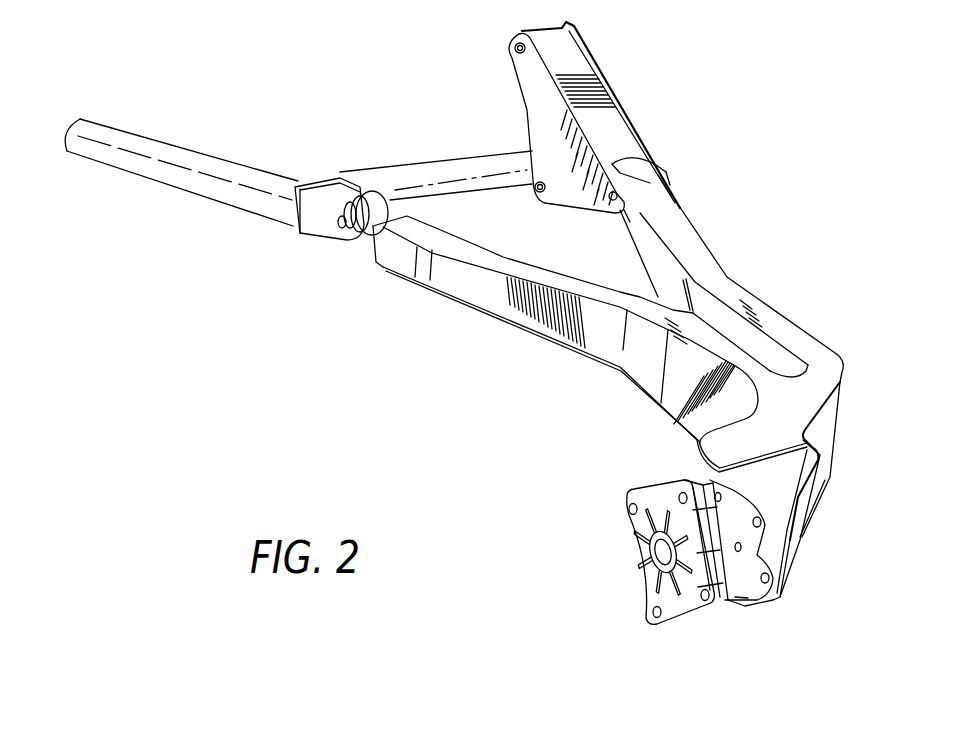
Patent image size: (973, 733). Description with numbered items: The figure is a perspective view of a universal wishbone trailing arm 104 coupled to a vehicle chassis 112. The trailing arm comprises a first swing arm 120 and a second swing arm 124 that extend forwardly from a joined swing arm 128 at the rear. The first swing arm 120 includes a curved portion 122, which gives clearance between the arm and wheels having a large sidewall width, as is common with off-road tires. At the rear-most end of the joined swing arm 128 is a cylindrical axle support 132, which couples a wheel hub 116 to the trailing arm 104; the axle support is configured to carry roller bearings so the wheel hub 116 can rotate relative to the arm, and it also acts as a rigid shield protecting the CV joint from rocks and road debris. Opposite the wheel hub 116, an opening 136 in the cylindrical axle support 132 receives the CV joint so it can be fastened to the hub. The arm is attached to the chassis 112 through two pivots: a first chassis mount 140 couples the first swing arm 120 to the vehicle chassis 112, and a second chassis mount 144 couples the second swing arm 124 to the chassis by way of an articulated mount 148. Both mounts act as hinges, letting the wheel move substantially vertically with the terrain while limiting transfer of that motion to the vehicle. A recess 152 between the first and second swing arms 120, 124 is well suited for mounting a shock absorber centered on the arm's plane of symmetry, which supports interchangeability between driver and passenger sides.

The universal wishbone trailing arm 104 is at (842, 617).
The vehicle chassis 112 is at (437, 170).
The wheel hub 116 is at (643, 540).
The first swing arm 120 is at (455, 282).
The curved portion 122 is at (640, 367).
The second swing arm 124 is at (670, 230).
The joined swing arm 128 is at (823, 420).
The cylindrical axle support 132 is at (760, 600).
The opening 136 is at (793, 547).
The first chassis mount 140 is at (363, 237).
The second chassis mount 144 is at (646, 176).
The articulated mount 148 is at (590, 77).
The recess 152 is at (777, 357).